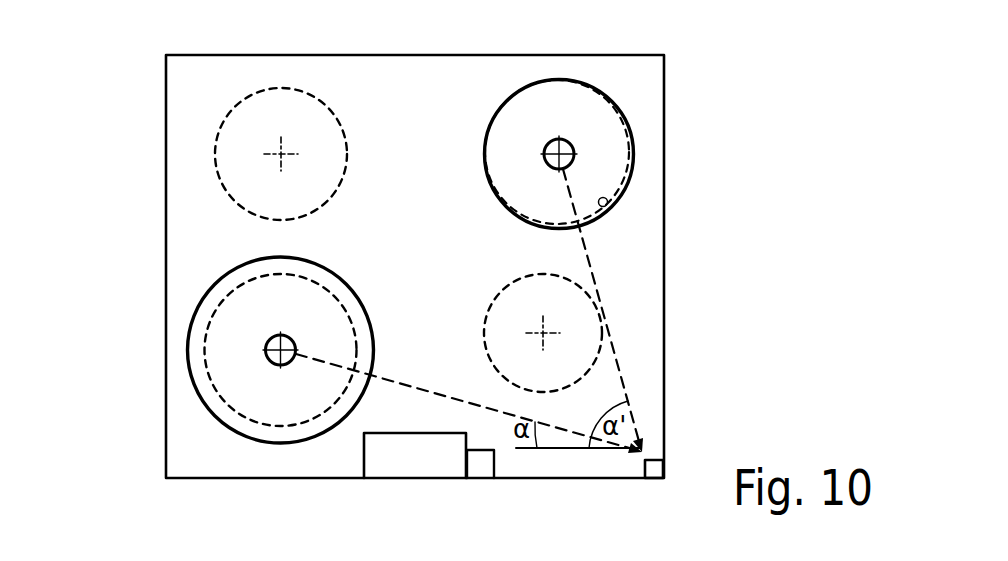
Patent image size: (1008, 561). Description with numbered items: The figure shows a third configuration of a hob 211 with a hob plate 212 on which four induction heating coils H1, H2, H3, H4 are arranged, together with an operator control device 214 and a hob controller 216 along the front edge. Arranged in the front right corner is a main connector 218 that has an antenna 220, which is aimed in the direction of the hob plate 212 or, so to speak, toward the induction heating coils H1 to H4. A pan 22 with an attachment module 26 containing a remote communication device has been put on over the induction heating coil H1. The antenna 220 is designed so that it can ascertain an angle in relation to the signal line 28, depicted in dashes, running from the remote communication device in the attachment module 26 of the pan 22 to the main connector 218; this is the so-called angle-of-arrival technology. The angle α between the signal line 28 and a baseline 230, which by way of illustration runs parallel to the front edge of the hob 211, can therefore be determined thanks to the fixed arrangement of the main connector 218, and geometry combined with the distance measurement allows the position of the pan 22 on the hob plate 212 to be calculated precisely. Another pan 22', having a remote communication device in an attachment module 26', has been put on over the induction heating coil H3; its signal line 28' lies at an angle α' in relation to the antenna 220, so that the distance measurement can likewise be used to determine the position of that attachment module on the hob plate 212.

The hob 211 is at (508, 254).
The hob plate 212 is at (657, 110).
The pan 22 is at (225, 325).
The pan 22' is at (622, 154).
The attachment module 26 is at (187, 322).
The attachment module 26' is at (648, 140).
The signal line 28 is at (468, 446).
The signal line 28' is at (659, 310).
The induction heating coil H1 is at (206, 351).
The induction heating coil H2 is at (225, 116).
The induction heating coil H3 is at (607, 201).
The induction heating coil H4 is at (598, 358).
The operator control device 214 is at (402, 467).
The hob controller 216 is at (496, 465).
The main connector 218 is at (652, 460).
The antenna 220 is at (655, 425).
The baseline 230 is at (570, 448).